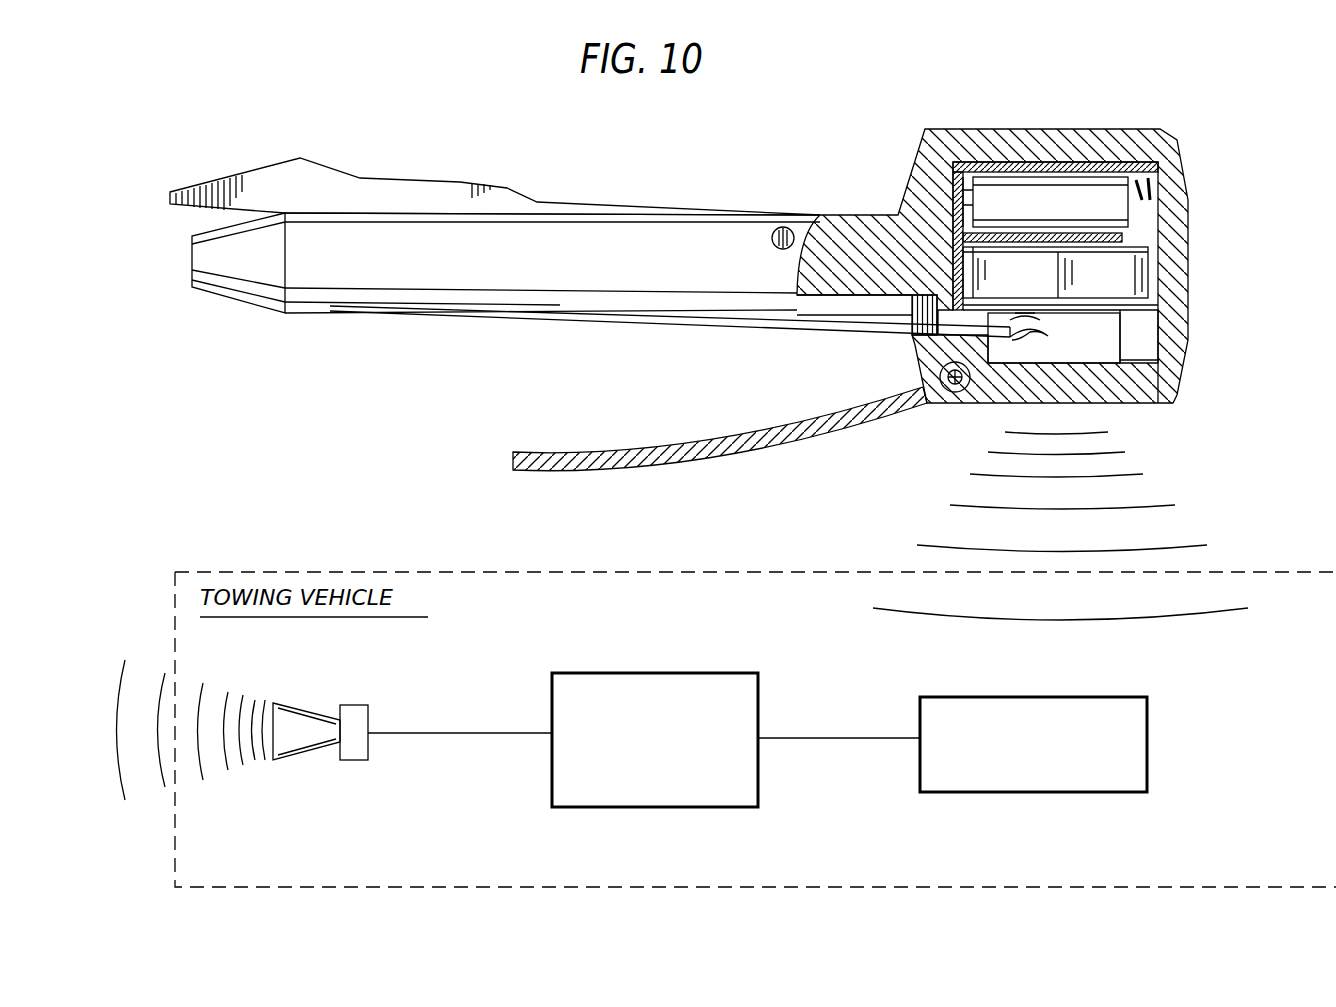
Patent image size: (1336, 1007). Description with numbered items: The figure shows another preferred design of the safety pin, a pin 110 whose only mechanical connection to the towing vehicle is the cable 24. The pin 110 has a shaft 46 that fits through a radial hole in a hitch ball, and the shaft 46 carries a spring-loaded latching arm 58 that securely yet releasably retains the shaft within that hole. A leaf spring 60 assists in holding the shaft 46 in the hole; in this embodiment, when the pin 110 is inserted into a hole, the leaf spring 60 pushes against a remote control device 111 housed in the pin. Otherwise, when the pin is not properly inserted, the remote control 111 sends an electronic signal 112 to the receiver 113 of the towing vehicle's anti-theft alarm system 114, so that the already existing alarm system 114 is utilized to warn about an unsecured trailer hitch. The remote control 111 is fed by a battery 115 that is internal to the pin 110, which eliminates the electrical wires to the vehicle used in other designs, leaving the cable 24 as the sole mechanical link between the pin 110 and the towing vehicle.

The cable 24 is at (577, 452).
The shaft 46 is at (367, 300).
The spring-loaded latching arm 58 is at (313, 187).
The leaf spring 60 is at (882, 332).
The pin 110 is at (1108, 96).
The remote control device 111 is at (1130, 272).
The electronic signal 112 is at (1132, 473).
The receiver 113 is at (1147, 765).
The anti-theft alarm system 114 is at (758, 785).
The battery 115 is at (1112, 198).